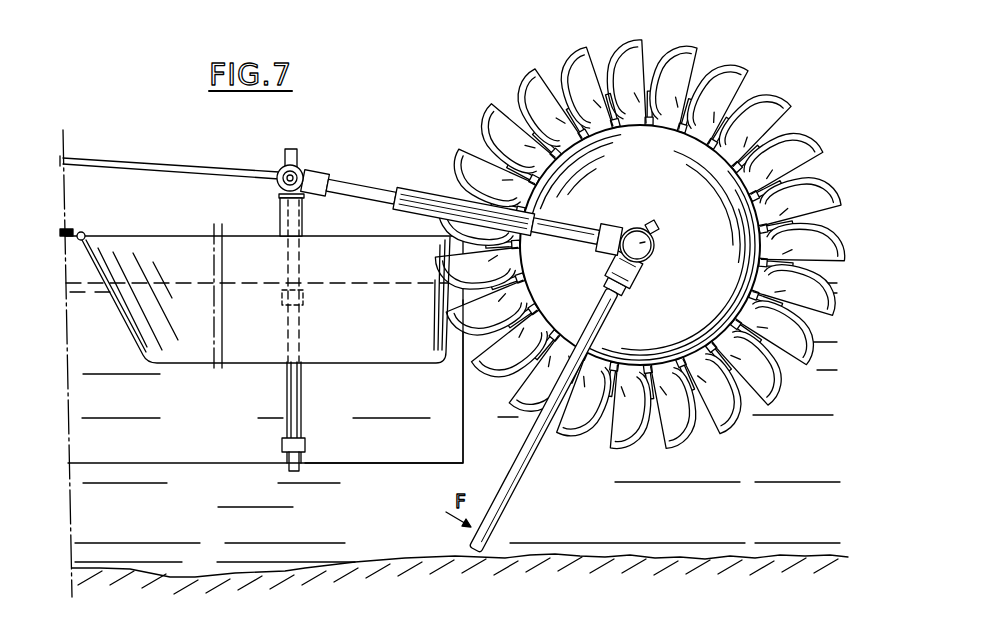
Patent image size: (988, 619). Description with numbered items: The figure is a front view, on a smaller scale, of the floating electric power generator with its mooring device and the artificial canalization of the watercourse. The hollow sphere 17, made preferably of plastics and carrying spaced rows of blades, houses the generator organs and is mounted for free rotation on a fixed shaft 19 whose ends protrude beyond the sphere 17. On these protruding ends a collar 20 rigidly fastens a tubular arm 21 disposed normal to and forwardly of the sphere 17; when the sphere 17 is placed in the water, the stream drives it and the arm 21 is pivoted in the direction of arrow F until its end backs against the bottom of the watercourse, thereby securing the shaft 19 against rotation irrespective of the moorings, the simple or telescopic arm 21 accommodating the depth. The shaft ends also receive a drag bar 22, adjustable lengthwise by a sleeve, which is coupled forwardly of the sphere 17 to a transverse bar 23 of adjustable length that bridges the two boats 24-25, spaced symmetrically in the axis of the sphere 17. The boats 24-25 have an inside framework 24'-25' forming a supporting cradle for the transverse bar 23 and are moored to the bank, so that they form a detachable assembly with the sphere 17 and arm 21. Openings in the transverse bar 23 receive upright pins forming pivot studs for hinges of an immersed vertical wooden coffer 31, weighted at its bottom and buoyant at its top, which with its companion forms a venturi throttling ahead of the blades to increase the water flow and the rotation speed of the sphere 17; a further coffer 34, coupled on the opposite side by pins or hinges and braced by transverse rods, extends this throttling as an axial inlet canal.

The hollow sphere 17 is at (742, 112).
The fixed shaft 19 is at (656, 240).
The collar 20 is at (626, 280).
The arm 21 is at (502, 507).
The drag bar 22 is at (354, 186).
The transverse bar 23 is at (297, 168).
The inside framework of the boats 24'-25' is at (258, 210).
The boats 24-25 is at (386, 355).
The vertical coffer 31 is at (230, 456).
The further coffer 34 is at (412, 456).